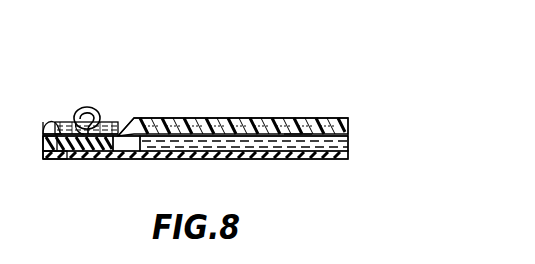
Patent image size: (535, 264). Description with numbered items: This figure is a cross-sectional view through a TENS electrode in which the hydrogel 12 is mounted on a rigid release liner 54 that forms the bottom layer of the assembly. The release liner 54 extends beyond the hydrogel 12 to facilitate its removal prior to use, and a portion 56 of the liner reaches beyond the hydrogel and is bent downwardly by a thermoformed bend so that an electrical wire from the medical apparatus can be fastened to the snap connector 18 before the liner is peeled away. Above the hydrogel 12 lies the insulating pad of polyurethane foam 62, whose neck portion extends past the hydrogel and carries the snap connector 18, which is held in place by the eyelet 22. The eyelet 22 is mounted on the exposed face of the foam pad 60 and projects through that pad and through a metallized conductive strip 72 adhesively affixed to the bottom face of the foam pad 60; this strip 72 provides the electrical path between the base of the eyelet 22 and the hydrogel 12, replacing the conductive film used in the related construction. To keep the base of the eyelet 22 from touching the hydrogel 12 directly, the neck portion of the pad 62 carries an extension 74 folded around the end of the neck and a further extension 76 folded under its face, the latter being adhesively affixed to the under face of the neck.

The hydrogel 12 is at (168, 151).
The snap electrical connector 18 is at (95, 107).
The eyelet 22 is at (43, 138).
The release liner 54 is at (217, 158).
The portion of release liner 56 is at (82, 157).
The foam pad 60 is at (346, 121).
The insulating pad of polyurethane foam 62 is at (245, 125).
The metallized conductive strip 72 is at (292, 128).
The extension 74 is at (47, 132).
The extension 76 is at (53, 155).